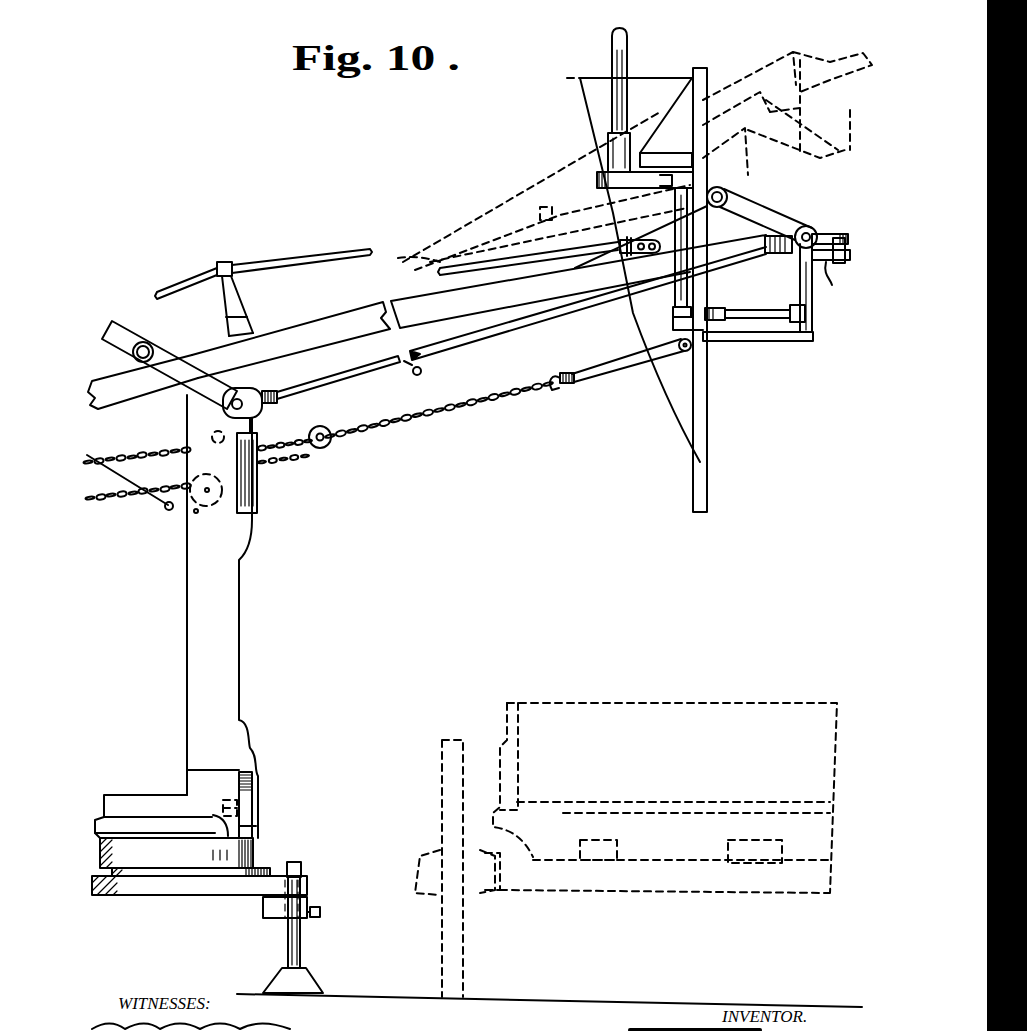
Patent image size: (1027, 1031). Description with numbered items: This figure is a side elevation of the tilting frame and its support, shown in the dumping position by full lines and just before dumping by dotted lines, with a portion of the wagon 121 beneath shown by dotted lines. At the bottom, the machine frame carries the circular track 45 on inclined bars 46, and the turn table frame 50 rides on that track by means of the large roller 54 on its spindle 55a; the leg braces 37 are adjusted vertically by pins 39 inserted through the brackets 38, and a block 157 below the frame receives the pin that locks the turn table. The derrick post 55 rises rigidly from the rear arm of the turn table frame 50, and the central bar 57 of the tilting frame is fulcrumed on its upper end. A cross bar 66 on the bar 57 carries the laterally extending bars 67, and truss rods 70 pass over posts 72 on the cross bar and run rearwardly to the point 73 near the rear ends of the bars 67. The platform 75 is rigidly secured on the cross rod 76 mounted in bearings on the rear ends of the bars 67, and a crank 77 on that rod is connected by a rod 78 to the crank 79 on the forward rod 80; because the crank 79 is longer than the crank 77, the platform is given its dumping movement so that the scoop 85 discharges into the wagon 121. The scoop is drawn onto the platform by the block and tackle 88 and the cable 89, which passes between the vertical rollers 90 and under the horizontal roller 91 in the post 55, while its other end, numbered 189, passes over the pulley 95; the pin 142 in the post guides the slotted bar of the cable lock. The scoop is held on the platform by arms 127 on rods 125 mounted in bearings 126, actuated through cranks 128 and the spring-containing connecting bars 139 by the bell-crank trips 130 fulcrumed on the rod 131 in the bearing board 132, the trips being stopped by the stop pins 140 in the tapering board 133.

The leg brace 37 is at (299, 960).
The bracket 38 is at (270, 912).
The pin 39 is at (319, 911).
The circular track 45 is at (270, 851).
The inclined bar 46 is at (178, 890).
The turn table frame 50 is at (130, 803).
The large roller 54 is at (252, 797).
The derrick post 55 is at (228, 648).
The spindle 55a is at (258, 829).
The central bar 57 is at (104, 378).
The cross bar 66 is at (244, 322).
The laterally extending bar 67 is at (340, 315).
The truss rod 70 is at (303, 260).
The post 72 is at (236, 298).
The point 73 is at (629, 240).
The platform 75 is at (709, 403).
The cross rod 76 is at (730, 196).
The crank 77 is at (770, 218).
The rod 78 is at (396, 363).
The crank 79 is at (173, 374).
The rod 80 is at (145, 342).
The scoop 85 is at (591, 115).
The block and tackle 88 is at (325, 448).
The cable 89 is at (338, 424).
The vertical roller 90 is at (257, 494).
The horizontal roller 91 is at (248, 428).
The pulley 95 is at (166, 510).
The wagon 121 is at (594, 712).
The rod 125 is at (680, 212).
The bearing 126 is at (683, 163).
The arm 127 is at (598, 179).
The crank 128 is at (675, 312).
The bell-crank trip 130 is at (830, 264).
The rod 131 is at (815, 332).
The bearing board 132 is at (768, 338).
The board 133 is at (830, 235).
The connecting bar 139 is at (708, 308).
The stop pin 140 is at (847, 249).
The pin 142 is at (136, 450).
The block 157 is at (214, 822).
The cable 189 is at (116, 498).